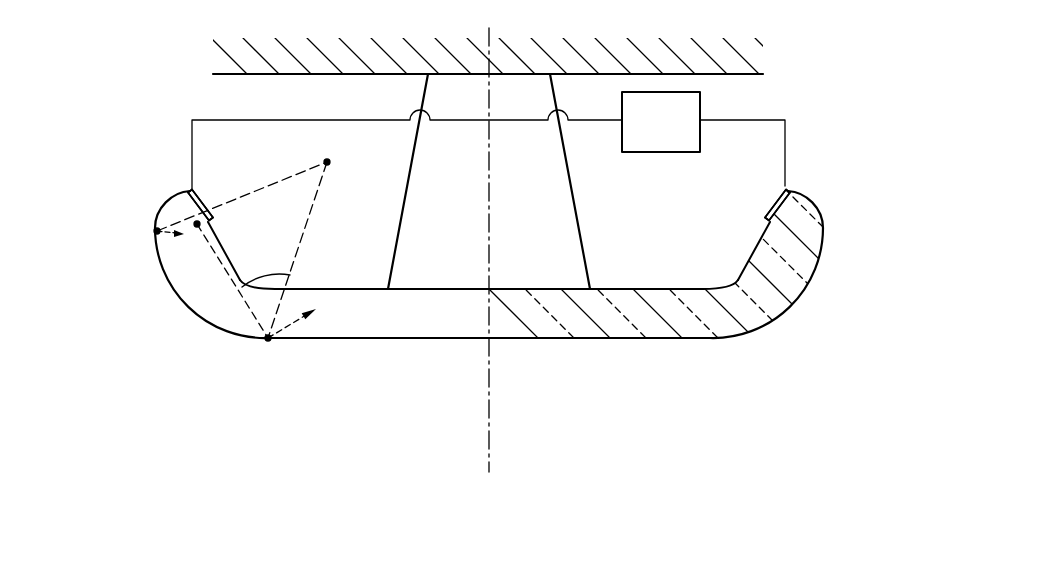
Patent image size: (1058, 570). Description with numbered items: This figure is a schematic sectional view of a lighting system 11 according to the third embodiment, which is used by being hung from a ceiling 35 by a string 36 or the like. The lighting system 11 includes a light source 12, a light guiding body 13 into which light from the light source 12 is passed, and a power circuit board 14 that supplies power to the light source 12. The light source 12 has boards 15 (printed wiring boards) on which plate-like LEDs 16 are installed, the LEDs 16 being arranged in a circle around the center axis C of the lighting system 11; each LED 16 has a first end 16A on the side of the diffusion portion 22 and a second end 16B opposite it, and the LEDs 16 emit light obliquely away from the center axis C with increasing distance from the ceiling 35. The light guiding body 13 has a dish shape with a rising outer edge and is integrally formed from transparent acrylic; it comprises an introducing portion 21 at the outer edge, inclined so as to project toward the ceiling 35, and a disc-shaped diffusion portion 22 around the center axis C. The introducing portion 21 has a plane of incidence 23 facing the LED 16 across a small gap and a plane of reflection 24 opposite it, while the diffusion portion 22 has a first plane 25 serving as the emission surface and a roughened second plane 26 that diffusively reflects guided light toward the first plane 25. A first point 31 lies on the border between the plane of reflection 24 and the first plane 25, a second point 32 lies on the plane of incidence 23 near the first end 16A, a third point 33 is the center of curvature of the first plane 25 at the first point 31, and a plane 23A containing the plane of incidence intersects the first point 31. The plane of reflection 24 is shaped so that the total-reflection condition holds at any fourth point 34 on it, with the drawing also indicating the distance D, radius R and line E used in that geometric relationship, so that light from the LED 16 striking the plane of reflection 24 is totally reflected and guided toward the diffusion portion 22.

The lighting system 11 is at (845, 160).
The light source 12 is at (147, 190).
The light guiding body 13 is at (568, 362).
The power circuit board 14 is at (667, 153).
The board 15 is at (206, 195).
The LED 16 is at (486, 180).
The first end 16A is at (214, 218).
The second end 16B is at (189, 190).
The introducing portion 21 is at (170, 270).
The diffusion portion 22 is at (441, 340).
The plane of incidence 23 is at (216, 240).
The plane containing the plane of incidence 23A is at (247, 298).
The plane of reflection 24 is at (179, 296).
The first plane 25 is at (388, 340).
The second plane 26 is at (422, 288).
The first point 31 is at (268, 342).
The second point 32 is at (197, 228).
The third point 33 is at (330, 162).
The fourth point 34 is at (154, 232).
The ceiling 35 is at (712, 76).
The string 36 is at (404, 203).
The center axis C is at (494, 445).
The distance D is at (242, 195).
The radius R is at (297, 250).
The line E is at (232, 281).